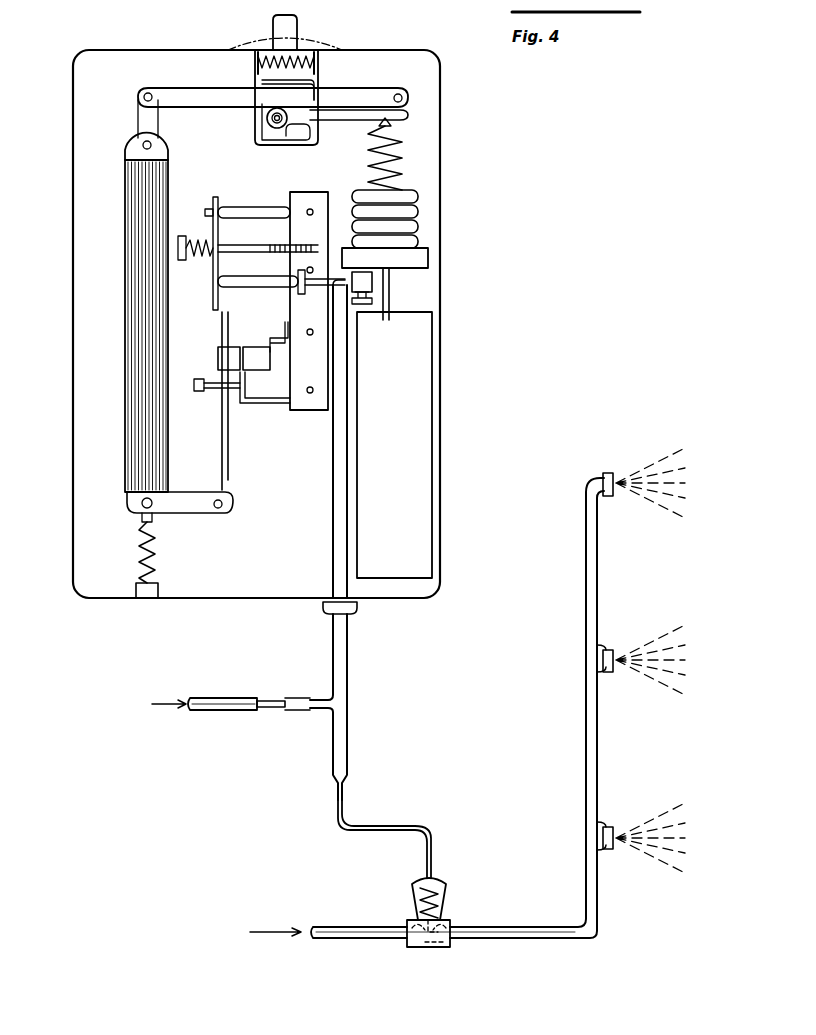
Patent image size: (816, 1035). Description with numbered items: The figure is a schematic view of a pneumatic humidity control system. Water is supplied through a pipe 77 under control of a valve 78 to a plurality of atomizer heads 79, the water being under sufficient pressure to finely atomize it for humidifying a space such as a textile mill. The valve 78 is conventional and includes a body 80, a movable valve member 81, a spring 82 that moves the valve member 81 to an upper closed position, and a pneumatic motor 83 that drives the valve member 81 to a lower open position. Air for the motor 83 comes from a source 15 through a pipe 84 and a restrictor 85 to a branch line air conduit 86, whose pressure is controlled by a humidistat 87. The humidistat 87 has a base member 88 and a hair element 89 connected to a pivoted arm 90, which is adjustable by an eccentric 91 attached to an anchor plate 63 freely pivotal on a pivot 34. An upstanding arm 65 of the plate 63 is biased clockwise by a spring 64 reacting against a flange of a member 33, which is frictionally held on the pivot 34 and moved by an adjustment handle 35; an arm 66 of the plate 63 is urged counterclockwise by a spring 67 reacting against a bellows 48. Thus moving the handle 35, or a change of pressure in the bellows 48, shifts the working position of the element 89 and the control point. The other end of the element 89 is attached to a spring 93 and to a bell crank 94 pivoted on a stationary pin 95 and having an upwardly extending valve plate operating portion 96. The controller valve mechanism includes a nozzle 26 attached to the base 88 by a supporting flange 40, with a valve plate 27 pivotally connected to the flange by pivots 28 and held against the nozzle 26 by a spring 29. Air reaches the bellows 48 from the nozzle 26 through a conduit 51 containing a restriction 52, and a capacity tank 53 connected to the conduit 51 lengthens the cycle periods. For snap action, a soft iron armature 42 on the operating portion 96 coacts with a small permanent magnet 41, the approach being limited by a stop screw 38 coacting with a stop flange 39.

The air supply 15 is at (100, 697).
The nozzle 26 is at (232, 278).
The valve plate 27 is at (213, 302).
The pivots 28 is at (254, 206).
The spring 29 is at (200, 237).
The member 33 is at (316, 80).
The pivot 34 is at (284, 128).
The adjustment handle 35 is at (300, 32).
The stop screw 38 is at (200, 392).
The stop flange 39 is at (246, 378).
The supporting flange 40 is at (316, 192).
The permanent magnet 41 is at (259, 347).
The soft iron armature 42 is at (232, 347).
The bellows 48 is at (420, 216).
The conduit 51 is at (386, 292).
The restriction 52 is at (385, 280).
The capacity tank 53 is at (415, 391).
The anchor plate 63 is at (300, 138).
The spring 64 is at (277, 55).
The upstanding arm 65 is at (318, 66).
The arm 66 is at (344, 118).
The spring 67 is at (405, 150).
The pipe 77 is at (524, 938).
The valve 78 is at (455, 889).
The atomizer heads 79 is at (608, 472).
The body 80 is at (407, 946).
The movable valve member 81 is at (436, 946).
The spring 82 is at (412, 896).
The pneumatic motor 83 is at (438, 880).
The pipe 84 is at (216, 710).
The restrictor 85 is at (270, 700).
The branch line air conduit 86 is at (348, 662).
The humidistat 87 is at (486, 168).
The base member 88 is at (75, 78).
The hair element 89 is at (125, 303).
The pivoted arm 90 is at (210, 88).
The eccentric 91 is at (264, 121).
The spring 93 is at (138, 552).
The bell crank 94 is at (182, 506).
The stationary pin 95 is at (222, 506).
The valve plate operating portion 96 is at (226, 320).